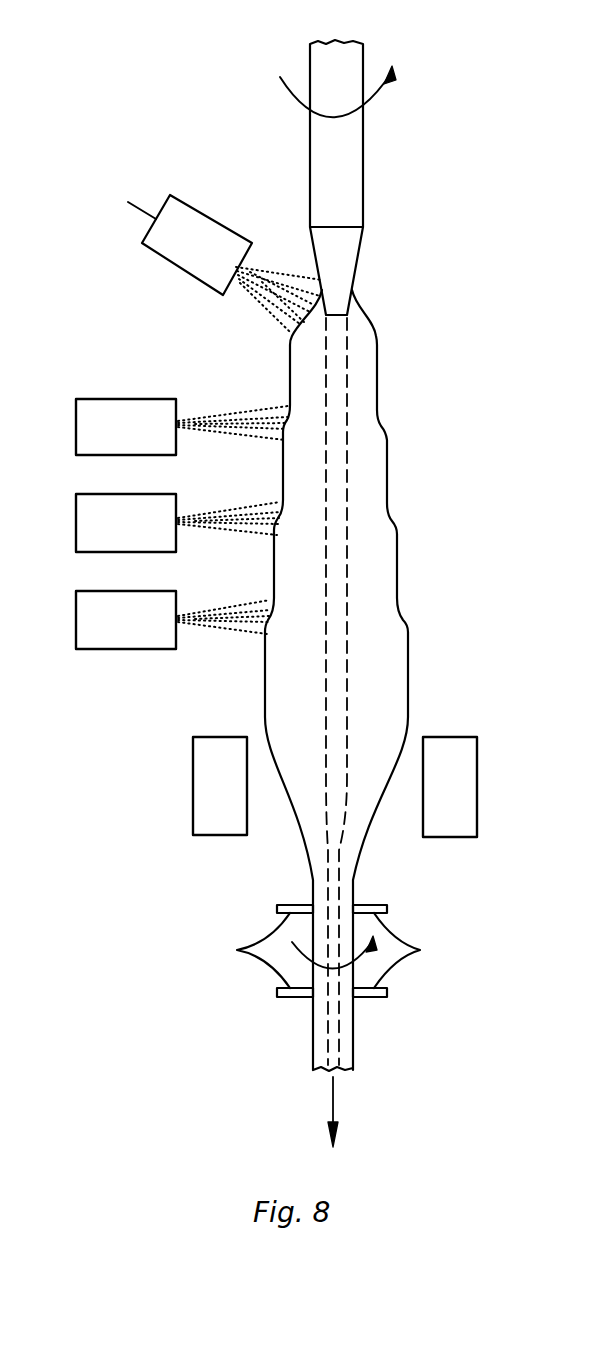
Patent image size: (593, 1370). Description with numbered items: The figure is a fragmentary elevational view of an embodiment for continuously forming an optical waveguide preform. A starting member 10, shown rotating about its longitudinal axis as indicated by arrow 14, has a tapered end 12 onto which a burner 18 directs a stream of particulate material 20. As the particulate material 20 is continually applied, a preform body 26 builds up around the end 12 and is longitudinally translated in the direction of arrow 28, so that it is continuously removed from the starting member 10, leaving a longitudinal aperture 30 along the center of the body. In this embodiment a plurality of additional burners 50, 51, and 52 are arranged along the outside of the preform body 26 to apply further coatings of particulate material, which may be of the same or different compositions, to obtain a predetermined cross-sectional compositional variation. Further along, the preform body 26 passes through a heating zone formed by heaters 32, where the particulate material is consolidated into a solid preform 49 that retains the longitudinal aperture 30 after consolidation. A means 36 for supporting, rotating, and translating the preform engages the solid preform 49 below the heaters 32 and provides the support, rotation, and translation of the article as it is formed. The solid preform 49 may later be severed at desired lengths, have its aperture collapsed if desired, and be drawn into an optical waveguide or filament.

The starting member 10 is at (365, 62).
The end of starting member 12 is at (358, 253).
The arrow indicating rotation 14 is at (283, 93).
The burner 18 is at (200, 212).
The particulate material 20 is at (272, 305).
The preform body 26 is at (378, 352).
The arrow indicating direction of translation 28 is at (335, 1095).
The longitudinal aperture 30 is at (345, 441).
The heaters 32 is at (193, 763).
The means for supporting, rotating, and translating the preform 36 is at (237, 950).
The solid preform 49 is at (353, 1030).
The burner 50 is at (76, 423).
The burner 51 is at (76, 521).
The burner 52 is at (76, 619).